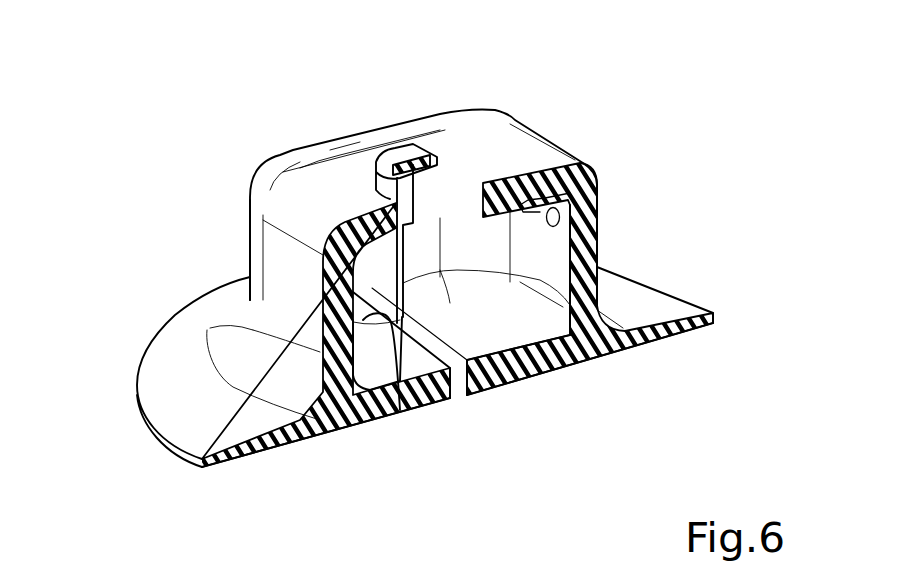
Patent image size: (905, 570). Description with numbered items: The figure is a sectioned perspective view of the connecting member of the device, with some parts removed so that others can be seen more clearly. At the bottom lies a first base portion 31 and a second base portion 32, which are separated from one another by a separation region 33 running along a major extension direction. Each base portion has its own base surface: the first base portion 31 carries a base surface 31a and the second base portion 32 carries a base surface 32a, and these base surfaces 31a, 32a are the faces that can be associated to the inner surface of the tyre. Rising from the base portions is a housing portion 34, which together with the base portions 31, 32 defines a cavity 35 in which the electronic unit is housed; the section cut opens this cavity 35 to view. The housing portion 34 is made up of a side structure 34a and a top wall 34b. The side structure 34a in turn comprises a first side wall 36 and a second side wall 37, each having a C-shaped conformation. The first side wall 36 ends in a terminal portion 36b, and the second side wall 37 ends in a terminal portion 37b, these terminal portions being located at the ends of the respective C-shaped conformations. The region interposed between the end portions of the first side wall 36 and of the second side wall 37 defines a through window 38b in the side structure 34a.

The first base portion 31 is at (655, 305).
The base surface 31a is at (592, 362).
The second base portion 32 is at (187, 408).
The base surface 32a is at (343, 427).
The separation region 33 is at (462, 398).
The housing portion 34 is at (247, 159).
The side structure 34a is at (250, 237).
The top wall 34b is at (328, 172).
The cavity 35 is at (495, 250).
The first side wall 36 is at (583, 260).
The terminal portion 36b is at (521, 368).
The second side wall 37 is at (332, 353).
The terminal portion 37b is at (400, 413).
The through window 38b is at (340, 297).